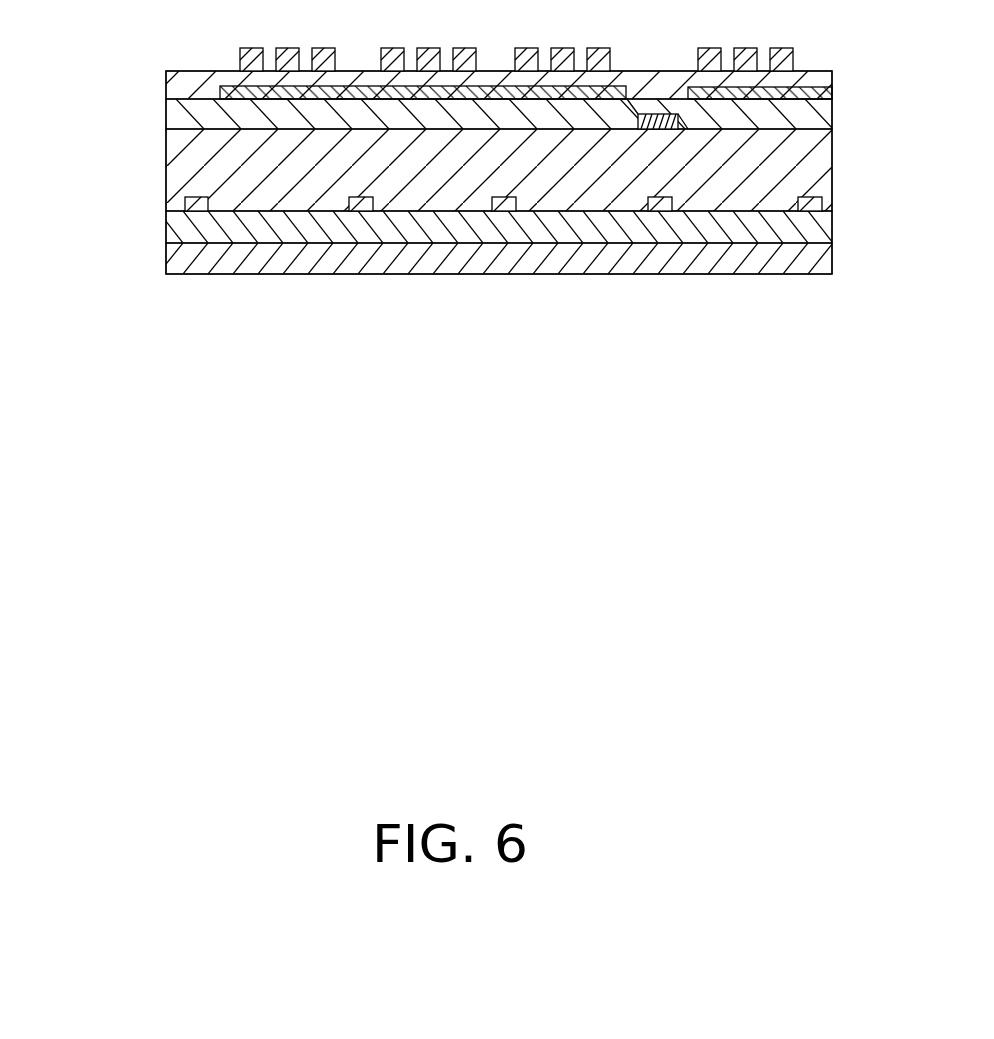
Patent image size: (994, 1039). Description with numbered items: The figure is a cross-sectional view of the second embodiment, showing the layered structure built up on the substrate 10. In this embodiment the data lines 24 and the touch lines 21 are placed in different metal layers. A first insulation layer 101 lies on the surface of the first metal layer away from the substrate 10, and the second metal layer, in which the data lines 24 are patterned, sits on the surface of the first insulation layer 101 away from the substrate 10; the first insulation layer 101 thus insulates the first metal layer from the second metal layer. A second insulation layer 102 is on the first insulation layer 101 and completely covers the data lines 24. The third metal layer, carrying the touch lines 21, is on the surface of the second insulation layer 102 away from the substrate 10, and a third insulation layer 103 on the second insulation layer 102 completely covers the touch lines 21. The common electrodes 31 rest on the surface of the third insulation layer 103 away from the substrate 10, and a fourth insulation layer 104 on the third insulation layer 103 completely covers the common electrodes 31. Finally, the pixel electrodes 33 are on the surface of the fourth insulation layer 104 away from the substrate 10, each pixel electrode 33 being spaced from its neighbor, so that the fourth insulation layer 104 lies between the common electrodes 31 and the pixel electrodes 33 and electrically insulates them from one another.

The substrate 10 is at (177, 260).
The first insulation layer 101 is at (820, 231).
The second insulation layer 102 is at (821, 165).
The third insulation layer 103 is at (817, 123).
The fourth insulation layer 104 is at (800, 82).
The touch lines 21 is at (656, 128).
The data lines 24 is at (190, 200).
The common electrodes 31 is at (352, 95).
The pixel electrodes 33 is at (257, 56).